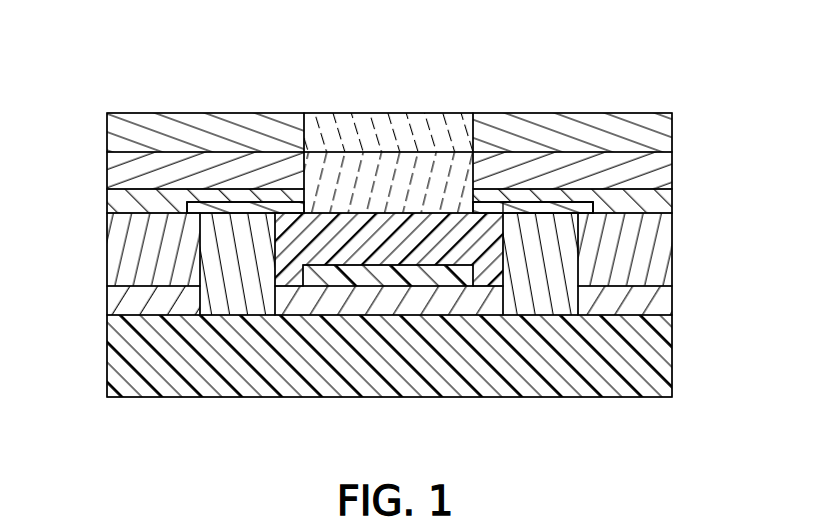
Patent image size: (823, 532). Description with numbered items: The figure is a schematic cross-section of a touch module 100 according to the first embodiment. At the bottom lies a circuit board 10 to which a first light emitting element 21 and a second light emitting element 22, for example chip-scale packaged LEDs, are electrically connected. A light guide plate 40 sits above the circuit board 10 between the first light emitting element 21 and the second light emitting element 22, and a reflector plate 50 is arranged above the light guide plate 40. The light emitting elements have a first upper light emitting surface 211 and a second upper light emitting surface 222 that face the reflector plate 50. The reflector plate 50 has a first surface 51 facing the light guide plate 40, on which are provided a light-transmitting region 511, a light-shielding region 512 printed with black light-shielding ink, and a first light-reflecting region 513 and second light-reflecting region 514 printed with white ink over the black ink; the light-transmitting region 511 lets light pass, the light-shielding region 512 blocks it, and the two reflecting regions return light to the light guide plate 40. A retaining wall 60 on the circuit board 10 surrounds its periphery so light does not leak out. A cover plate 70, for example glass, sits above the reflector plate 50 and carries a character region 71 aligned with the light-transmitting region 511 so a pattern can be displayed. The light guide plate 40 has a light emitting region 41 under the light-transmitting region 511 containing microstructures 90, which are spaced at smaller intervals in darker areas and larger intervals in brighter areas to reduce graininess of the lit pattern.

The touch module 100 is at (82, 66).
The circuit board 10 is at (175, 380).
The first light emitting element 21 is at (218, 302).
The second light emitting element 22 is at (637, 305).
The first upper light emitting surface 211 is at (270, 213).
The second upper light emitting surface 222 is at (570, 210).
The light guide plate 40 is at (297, 247).
The light emitting region 41 is at (348, 292).
The reflector plate 50 is at (130, 170).
The first surface 51 is at (672, 188).
The light-transmitting region 511 is at (347, 210).
The light-shielding region 512 is at (130, 205).
The first light-reflecting region 513 is at (207, 213).
The second light-reflecting region 514 is at (517, 210).
The retaining wall 60 is at (140, 266).
The cover plate 70 is at (672, 125).
The character region 71 is at (397, 143).
The microstructures 90 is at (445, 278).